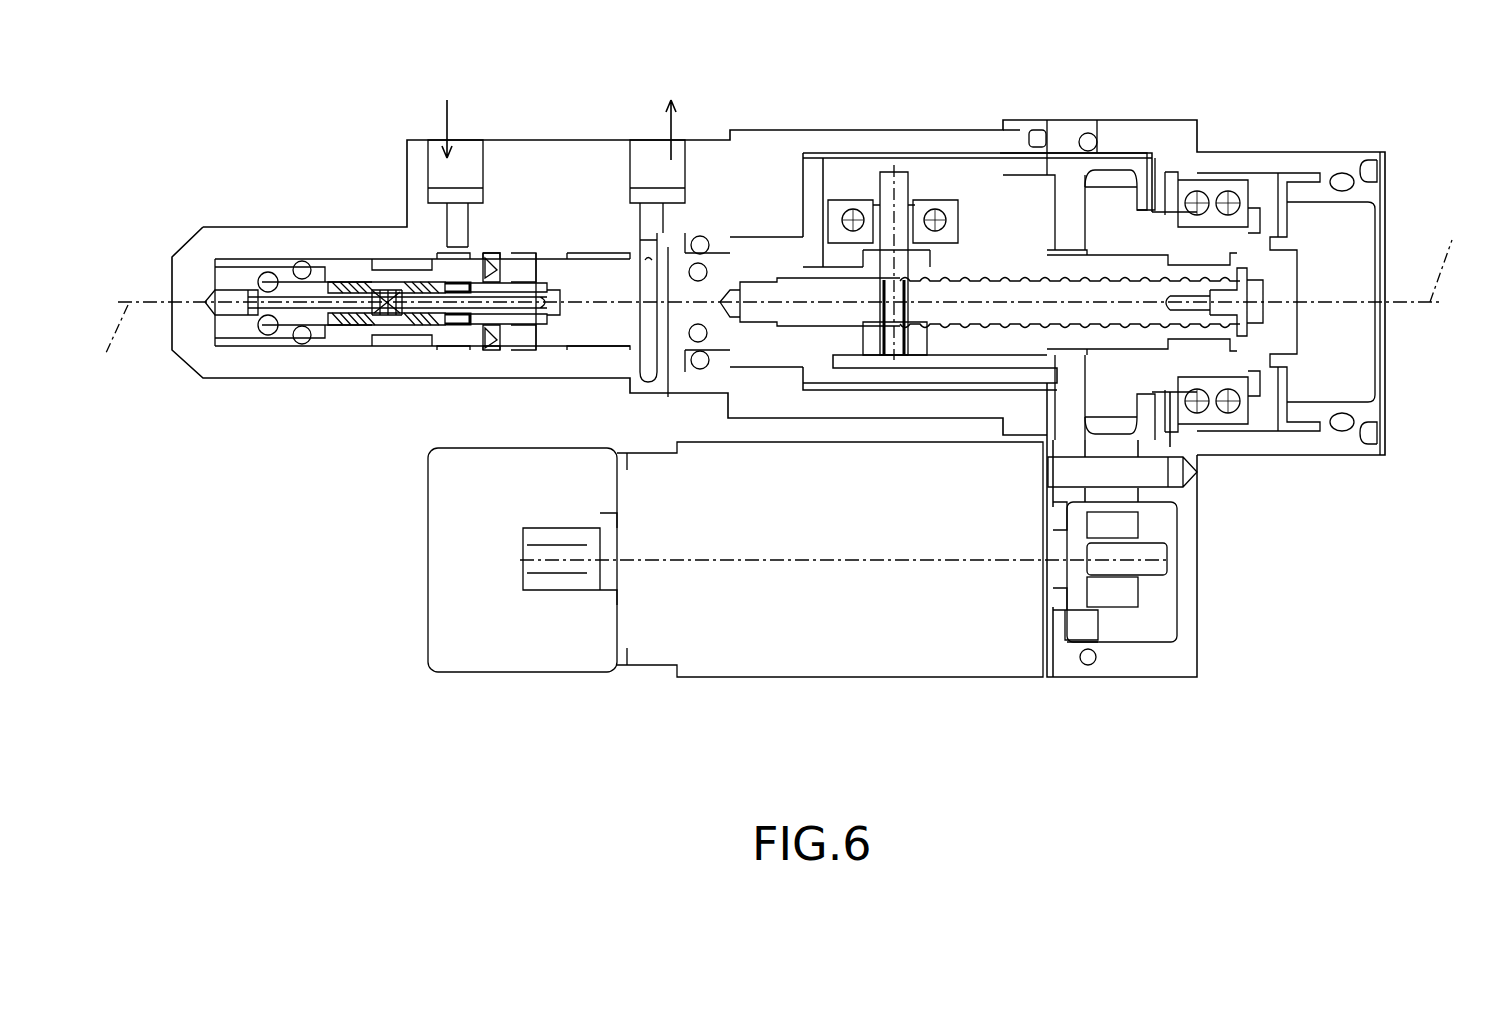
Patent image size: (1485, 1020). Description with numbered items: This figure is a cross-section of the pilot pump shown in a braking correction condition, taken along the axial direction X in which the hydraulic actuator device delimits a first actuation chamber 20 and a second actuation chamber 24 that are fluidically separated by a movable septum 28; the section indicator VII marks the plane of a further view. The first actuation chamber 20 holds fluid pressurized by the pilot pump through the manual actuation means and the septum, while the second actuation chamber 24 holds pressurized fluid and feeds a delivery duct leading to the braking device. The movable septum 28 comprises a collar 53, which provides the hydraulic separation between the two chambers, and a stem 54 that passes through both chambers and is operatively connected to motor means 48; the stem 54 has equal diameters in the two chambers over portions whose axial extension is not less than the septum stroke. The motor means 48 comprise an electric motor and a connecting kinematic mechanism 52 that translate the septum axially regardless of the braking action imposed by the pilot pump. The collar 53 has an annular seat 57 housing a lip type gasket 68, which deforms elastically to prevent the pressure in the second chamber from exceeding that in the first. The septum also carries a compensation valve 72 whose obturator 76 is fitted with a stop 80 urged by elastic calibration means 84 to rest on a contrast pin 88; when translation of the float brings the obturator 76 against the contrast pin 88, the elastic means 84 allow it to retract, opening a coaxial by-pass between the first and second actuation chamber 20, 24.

The first actuation chamber 20 is at (373, 337).
The second actuation chamber 24 is at (590, 347).
The movable septum 28 is at (673, 320).
The motor means 48 is at (772, 640).
The connecting kinematic mechanism 52 is at (1197, 486).
The collar 53 is at (520, 247).
The annular seat 57 is at (487, 340).
The stem 54 is at (436, 343).
The lip type gasket 68 is at (500, 250).
The compensation valve 72 is at (400, 283).
The obturator 76 is at (447, 278).
The stop 80 is at (547, 292).
The elastic calibration means 84 is at (297, 343).
The contrast pin 88 is at (700, 240).
The axial direction X is at (782, 294).
The view indicator VII is at (270, 215).